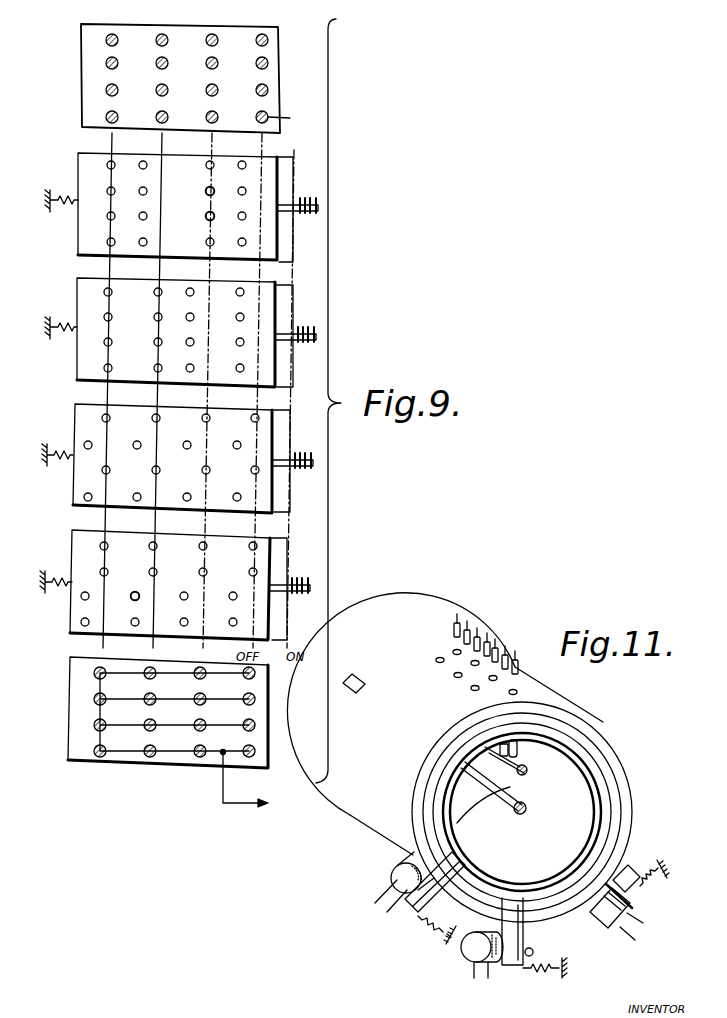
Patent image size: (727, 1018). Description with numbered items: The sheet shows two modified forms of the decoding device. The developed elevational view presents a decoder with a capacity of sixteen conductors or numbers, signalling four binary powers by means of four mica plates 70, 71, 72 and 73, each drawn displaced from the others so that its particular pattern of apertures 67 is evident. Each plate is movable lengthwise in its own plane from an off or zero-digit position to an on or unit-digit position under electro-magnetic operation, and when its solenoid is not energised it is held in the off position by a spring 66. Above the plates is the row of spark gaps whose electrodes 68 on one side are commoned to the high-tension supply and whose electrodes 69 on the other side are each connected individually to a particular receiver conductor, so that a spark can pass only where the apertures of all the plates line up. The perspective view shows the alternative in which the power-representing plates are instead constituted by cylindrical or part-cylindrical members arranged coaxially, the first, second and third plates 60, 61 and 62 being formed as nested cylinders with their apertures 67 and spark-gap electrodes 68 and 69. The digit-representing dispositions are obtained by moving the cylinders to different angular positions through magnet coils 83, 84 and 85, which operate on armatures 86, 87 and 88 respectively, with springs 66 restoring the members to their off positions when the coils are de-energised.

In FIG. 11, the first plate 60 is at (606, 740).
In FIG. 11, the second plate 61 is at (607, 782).
In FIG. 11, the third plate 62 is at (598, 802).
In FIG. 9, the springs 66 is at (60, 595).
In FIG. 11, the springs 66 is at (545, 972).
In FIG. 9, the apertures 67 is at (206, 218).
In FIG. 11, the apertures 67 is at (454, 676).
In FIG. 9, the electrodes 68 is at (146, 697).
In FIG. 11, the electrodes 68 is at (520, 758).
In FIG. 9, the electrodes 69 is at (160, 121).
In FIG. 11, the electrodes 69 is at (454, 634).
In FIG. 9, the mica plate 70 is at (84, 169).
In FIG. 9, the mica plate 71 is at (80, 292).
In FIG. 9, the mica plate 72 is at (80, 415).
In FIG. 9, the mica plate 73 is at (82, 540).
In FIG. 11, the magnet coil 83 is at (606, 929).
In FIG. 11, the magnet coil 84 is at (476, 965).
In FIG. 11, the magnet coil 85 is at (394, 878).
In FIG. 11, the armature 86 is at (634, 870).
In FIG. 11, the armature 87 is at (525, 928).
In FIG. 11, the armature 88 is at (438, 908).